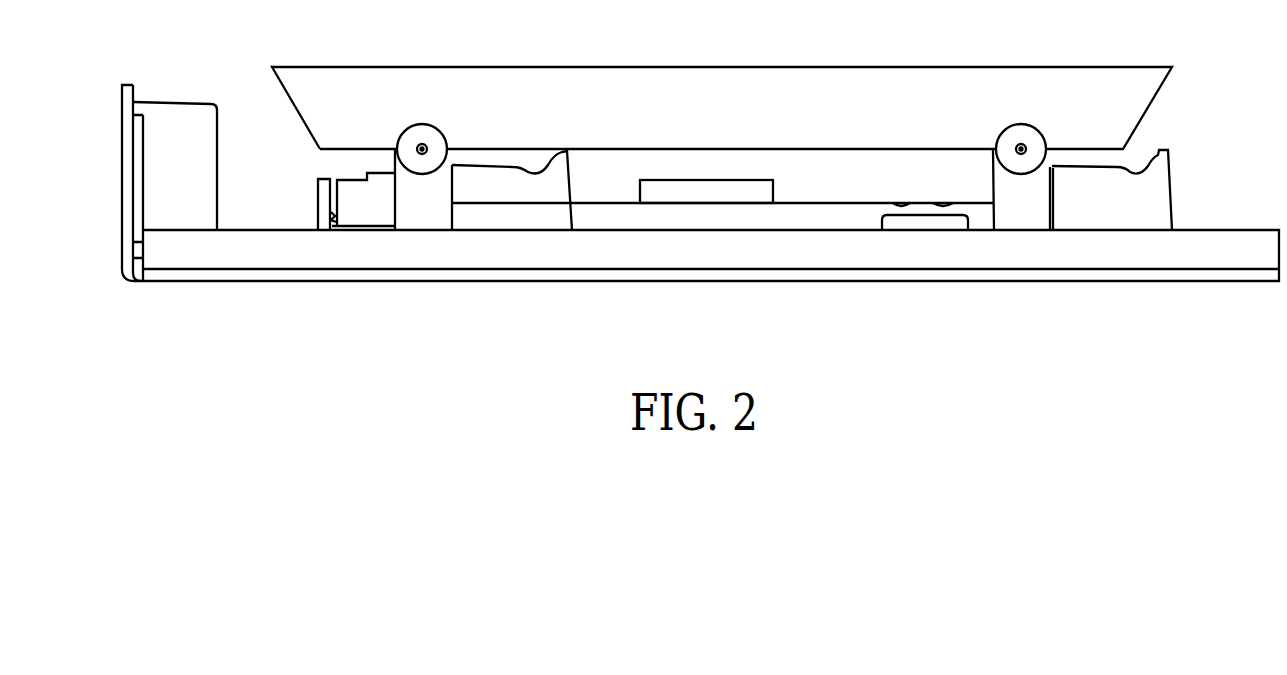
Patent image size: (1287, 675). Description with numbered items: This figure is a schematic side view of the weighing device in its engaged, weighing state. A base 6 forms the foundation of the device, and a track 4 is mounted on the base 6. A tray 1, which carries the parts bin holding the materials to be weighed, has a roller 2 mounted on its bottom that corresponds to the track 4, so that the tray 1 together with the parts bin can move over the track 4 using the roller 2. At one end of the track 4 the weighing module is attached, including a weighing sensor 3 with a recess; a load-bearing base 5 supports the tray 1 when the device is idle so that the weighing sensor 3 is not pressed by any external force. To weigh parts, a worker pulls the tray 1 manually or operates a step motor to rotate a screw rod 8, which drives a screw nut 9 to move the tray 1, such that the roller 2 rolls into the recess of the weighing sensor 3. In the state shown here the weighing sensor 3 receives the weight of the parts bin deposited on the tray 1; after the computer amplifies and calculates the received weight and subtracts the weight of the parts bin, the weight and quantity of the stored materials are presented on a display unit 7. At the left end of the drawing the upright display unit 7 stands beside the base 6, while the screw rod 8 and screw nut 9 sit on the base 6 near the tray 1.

The tray 1 is at (998, 107).
The roller 2 is at (412, 135).
The weighing sensor 3 is at (437, 205).
The track 4 is at (513, 173).
The load-bearing base 5 is at (1112, 210).
The base 6 is at (197, 252).
The display unit 7 is at (120, 178).
The screw rod 8 is at (333, 217).
The screw nut 9 is at (353, 193).